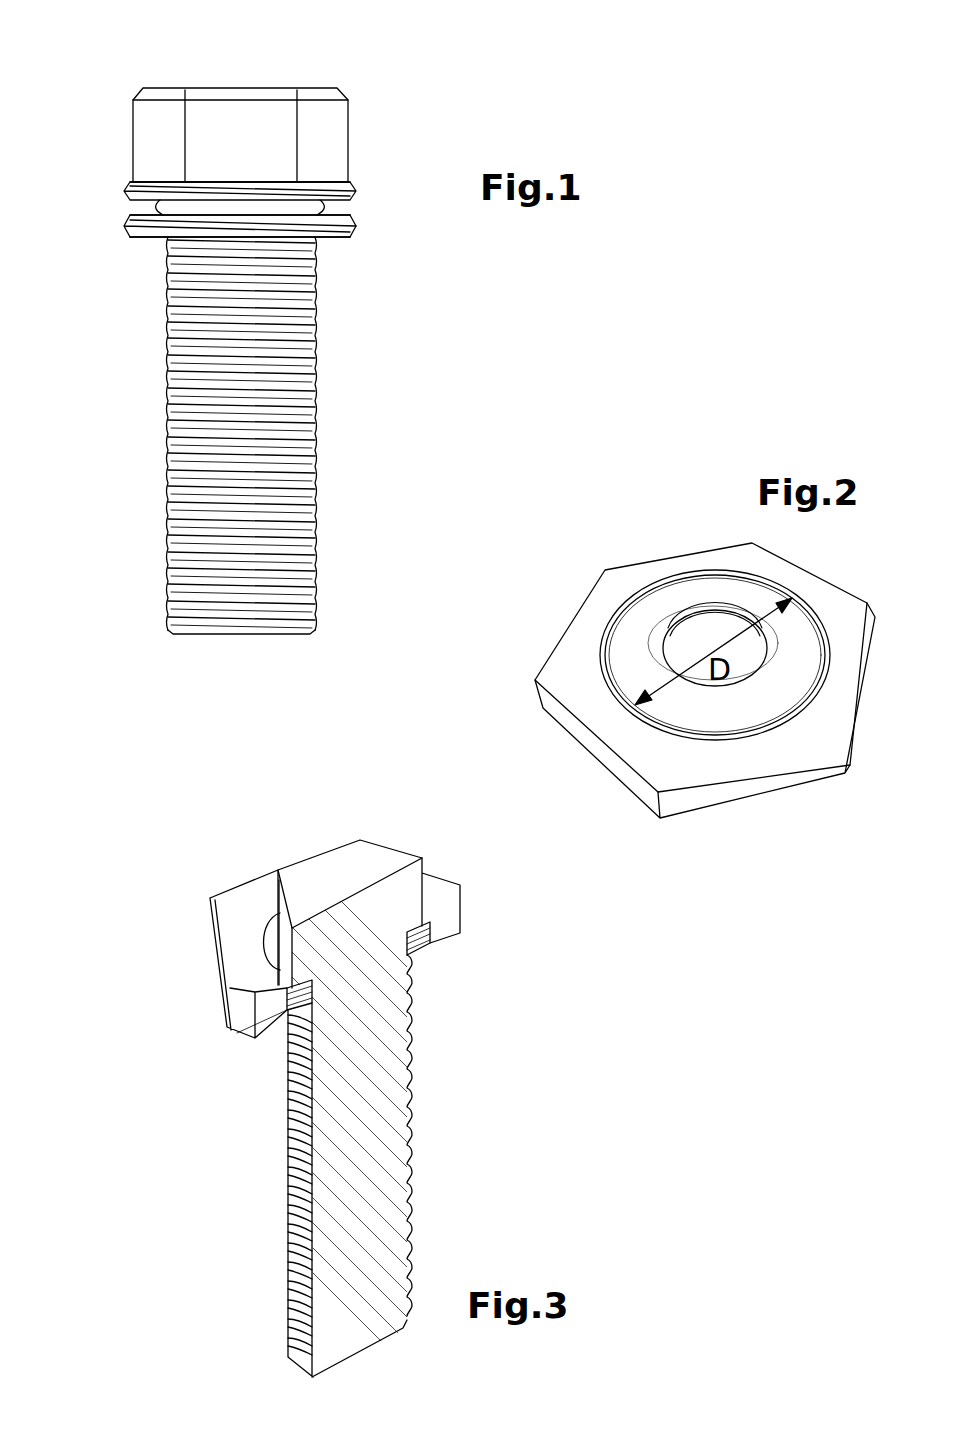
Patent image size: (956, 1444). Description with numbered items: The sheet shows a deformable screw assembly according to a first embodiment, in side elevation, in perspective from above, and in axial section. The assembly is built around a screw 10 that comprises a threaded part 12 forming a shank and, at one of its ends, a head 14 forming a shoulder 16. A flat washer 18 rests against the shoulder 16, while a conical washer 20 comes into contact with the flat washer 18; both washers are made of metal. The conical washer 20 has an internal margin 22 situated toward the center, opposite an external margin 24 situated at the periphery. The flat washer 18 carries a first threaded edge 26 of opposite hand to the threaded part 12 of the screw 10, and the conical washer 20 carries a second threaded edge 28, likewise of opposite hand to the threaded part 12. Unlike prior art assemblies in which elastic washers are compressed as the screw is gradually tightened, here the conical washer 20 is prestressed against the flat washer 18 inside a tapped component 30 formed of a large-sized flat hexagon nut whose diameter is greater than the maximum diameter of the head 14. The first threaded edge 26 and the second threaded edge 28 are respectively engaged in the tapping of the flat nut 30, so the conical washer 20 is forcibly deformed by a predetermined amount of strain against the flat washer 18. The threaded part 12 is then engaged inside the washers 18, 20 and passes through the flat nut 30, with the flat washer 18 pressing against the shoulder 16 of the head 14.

In FIG. 1, the screw 10 is at (412, 50).
In FIG. 1, the threaded part 12 is at (312, 373).
In FIG. 3, the threaded part 12 is at (387, 1090).
In FIG. 1, the head 14 is at (250, 118).
In FIG. 3, the head 14 is at (340, 870).
In FIG. 1, the shoulder 16 is at (240, 183).
In FIG. 3, the shoulder 16 is at (417, 957).
In FIG. 1, the flat washer 18 is at (153, 182).
In FIG. 2, the flat washer 18 is at (628, 648).
In FIG. 3, the flat washer 18 is at (302, 977).
In FIG. 1, the conical washer 20 is at (335, 232).
In FIG. 2, the conical washer 20 is at (752, 652).
In FIG. 3, the conical washer 20 is at (237, 1033).
In FIG. 1, the internal margin 22 is at (204, 207).
In FIG. 1, the external margin 24 is at (142, 240).
In FIG. 1, the first threaded edge 26 is at (343, 193).
In FIG. 1, the second threaded edge 28 is at (127, 228).
In FIG. 2, the tapped component 30 is at (628, 565).
In FIG. 3, the tapped component 30 is at (210, 952).